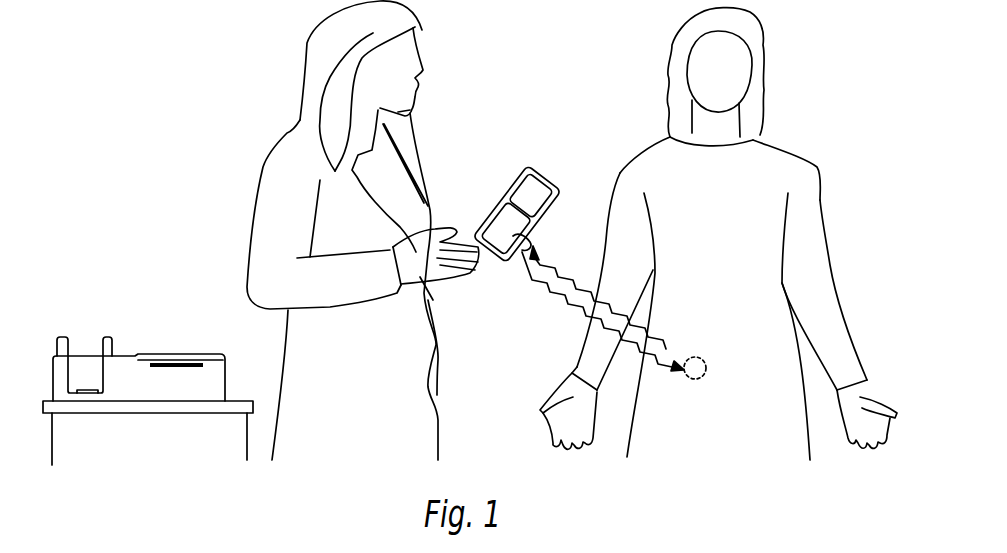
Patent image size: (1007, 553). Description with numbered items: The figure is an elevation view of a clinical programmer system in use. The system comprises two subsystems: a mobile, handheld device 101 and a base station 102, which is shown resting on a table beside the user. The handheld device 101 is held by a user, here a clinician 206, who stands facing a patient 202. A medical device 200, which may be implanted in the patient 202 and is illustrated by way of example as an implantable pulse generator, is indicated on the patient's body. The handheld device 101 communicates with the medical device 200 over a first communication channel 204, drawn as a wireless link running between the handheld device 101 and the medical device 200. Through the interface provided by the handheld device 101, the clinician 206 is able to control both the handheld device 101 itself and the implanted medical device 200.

The handheld device 101 is at (520, 187).
The base station 102 is at (165, 378).
The medical device 200 is at (697, 380).
The patient 202 is at (738, 226).
The first communication channel 204 is at (560, 300).
The clinician 206 is at (378, 351).